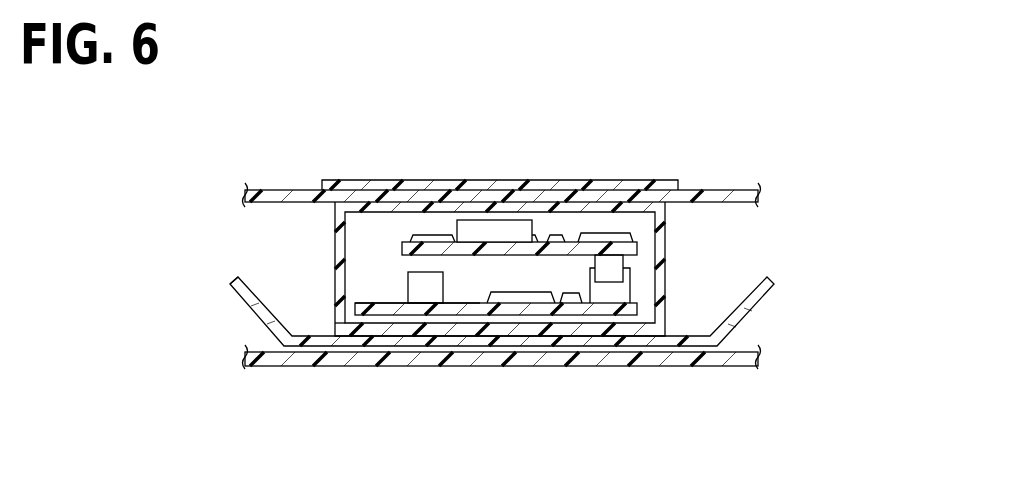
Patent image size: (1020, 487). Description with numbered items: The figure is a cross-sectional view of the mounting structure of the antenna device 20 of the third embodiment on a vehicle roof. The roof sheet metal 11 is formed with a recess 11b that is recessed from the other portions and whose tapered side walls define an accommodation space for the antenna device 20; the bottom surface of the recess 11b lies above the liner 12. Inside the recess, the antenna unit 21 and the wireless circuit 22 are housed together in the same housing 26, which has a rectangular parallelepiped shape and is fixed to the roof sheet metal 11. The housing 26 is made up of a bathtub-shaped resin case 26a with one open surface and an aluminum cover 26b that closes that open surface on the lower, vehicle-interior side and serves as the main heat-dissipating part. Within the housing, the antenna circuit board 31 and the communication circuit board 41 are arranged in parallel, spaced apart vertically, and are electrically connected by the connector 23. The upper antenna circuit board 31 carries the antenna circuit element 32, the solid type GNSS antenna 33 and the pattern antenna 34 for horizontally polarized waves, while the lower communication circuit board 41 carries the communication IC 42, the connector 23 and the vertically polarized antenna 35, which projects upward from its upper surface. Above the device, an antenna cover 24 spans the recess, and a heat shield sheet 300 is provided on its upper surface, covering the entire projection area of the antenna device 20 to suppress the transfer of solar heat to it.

The roof sheet metal 11 is at (258, 333).
The recess 11b is at (244, 289).
The liner 12 is at (708, 356).
The antenna device 20 is at (696, 262).
The antenna unit 21 is at (629, 223).
The wireless circuit 22 is at (463, 313).
The connector 23 is at (631, 283).
The antenna cover 24 is at (280, 191).
The housing 26 is at (312, 247).
The resin case 26a is at (338, 315).
The aluminum cover 26b is at (426, 334).
The antenna circuit board 31 is at (631, 246).
The antenna circuit element 32 is at (430, 237).
The GNSS antenna 33 is at (493, 226).
The pattern antenna 34 is at (605, 234).
The vertically polarized antenna 35 is at (410, 279).
The communication circuit board 41 is at (382, 311).
The communication IC 42 is at (515, 298).
The heat shield sheet 300 is at (565, 180).